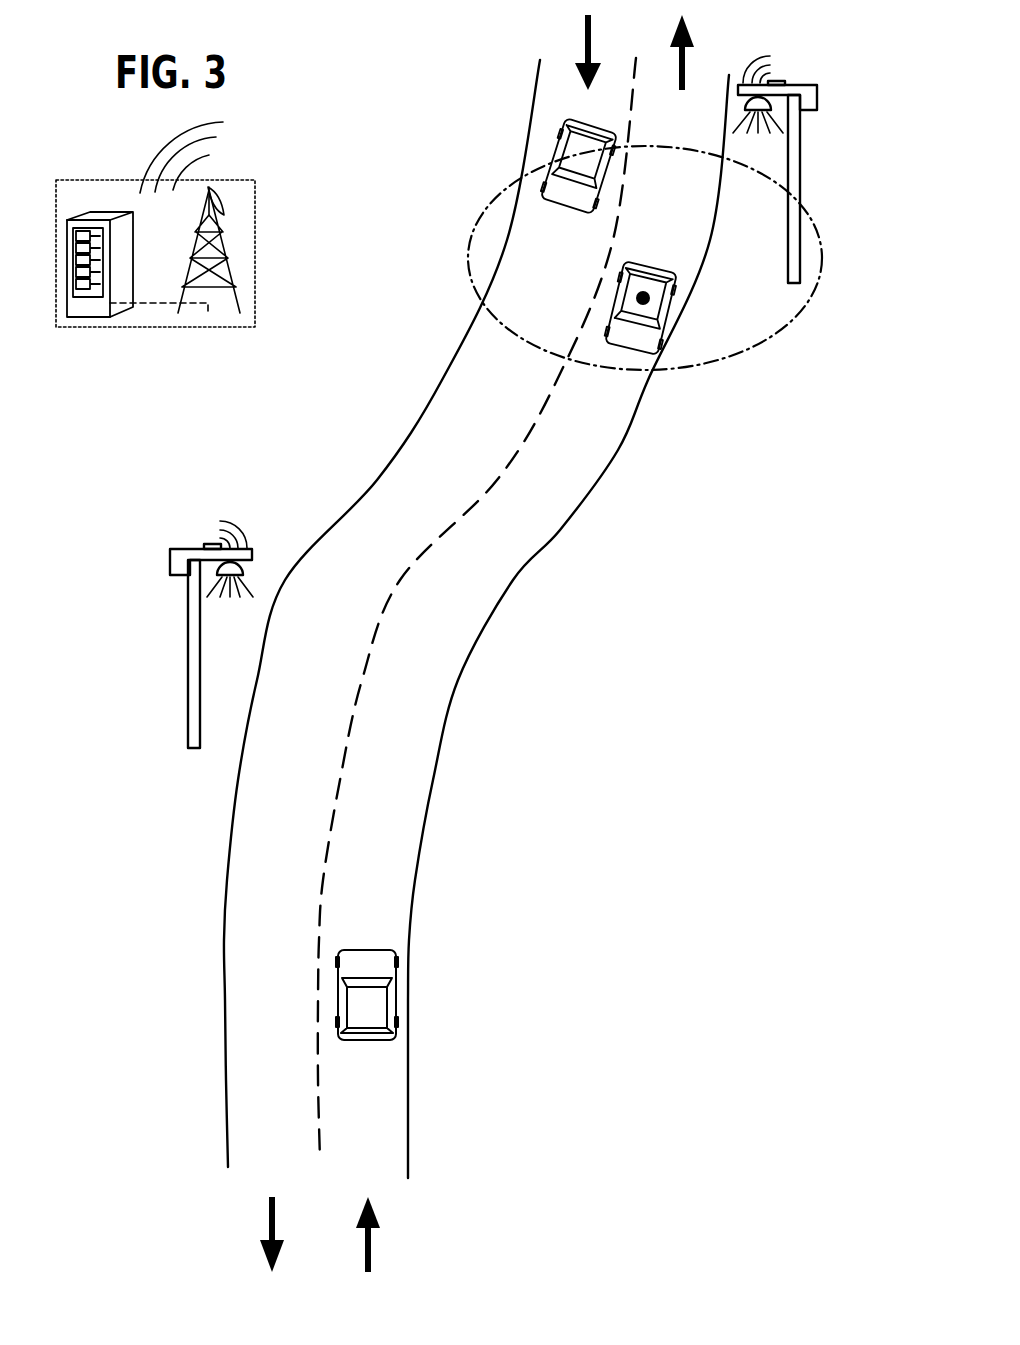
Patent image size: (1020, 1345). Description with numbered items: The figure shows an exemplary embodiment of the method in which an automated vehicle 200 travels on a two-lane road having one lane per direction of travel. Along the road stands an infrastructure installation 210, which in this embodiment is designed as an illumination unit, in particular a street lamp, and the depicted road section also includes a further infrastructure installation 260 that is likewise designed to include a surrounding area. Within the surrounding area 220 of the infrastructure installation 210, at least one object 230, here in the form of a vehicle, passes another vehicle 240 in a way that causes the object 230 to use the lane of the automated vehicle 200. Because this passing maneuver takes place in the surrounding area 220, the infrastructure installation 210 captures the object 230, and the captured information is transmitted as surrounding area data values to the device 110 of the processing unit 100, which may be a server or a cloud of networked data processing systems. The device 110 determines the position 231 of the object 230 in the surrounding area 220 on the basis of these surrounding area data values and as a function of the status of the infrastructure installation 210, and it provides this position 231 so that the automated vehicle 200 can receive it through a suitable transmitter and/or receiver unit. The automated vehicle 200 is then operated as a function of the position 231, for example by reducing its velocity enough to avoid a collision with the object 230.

The processing unit 100 is at (188, 327).
The device 110 is at (83, 297).
The automated vehicle 200 is at (372, 1006).
The infrastructure installation 210 is at (795, 187).
The surrounding area 220 is at (732, 318).
The object 230 is at (638, 348).
The position 231 is at (633, 297).
The another vehicle 240 is at (578, 145).
The further infrastructure installation 260 is at (193, 685).